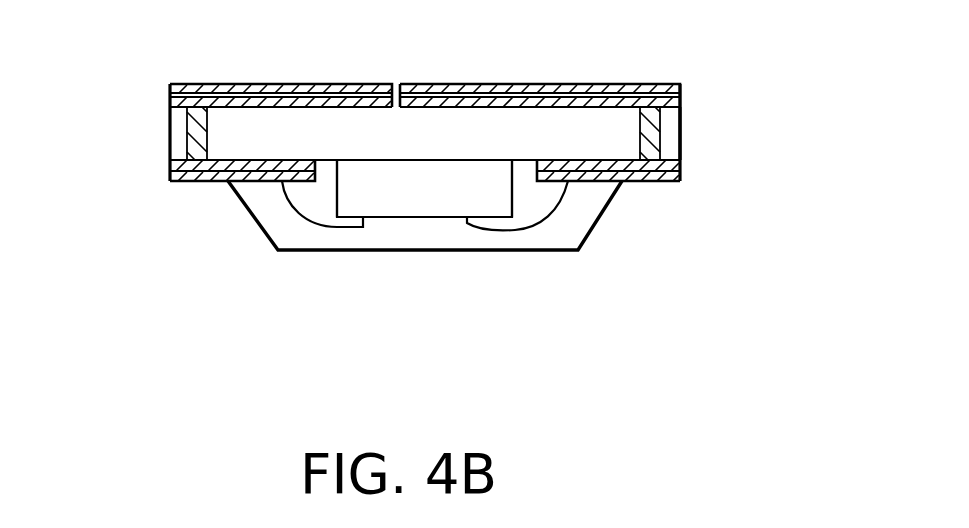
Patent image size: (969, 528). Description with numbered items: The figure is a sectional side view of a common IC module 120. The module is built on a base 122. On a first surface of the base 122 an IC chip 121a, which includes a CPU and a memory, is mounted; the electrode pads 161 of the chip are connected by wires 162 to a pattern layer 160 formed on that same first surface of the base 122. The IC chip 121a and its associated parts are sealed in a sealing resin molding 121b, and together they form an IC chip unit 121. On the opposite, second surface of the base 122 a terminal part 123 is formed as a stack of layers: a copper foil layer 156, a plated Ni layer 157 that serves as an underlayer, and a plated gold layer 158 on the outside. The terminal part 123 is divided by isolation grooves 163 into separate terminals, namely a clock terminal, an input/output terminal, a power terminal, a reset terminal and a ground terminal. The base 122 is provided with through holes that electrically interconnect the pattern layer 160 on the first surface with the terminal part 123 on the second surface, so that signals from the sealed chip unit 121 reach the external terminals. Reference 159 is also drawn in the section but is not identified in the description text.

The IC module 120 is at (743, 221).
The IC chip unit 121 is at (600, 328).
The IC chip 121a is at (428, 200).
The sealing resin molding 121b is at (544, 237).
The base 122 is at (277, 126).
The terminal part 123 is at (800, 5).
The copper foil layer 156 is at (681, 119).
The plated Ni layer 157 is at (681, 98).
The plated gold layer 158 is at (657, 86).
The sealing member 159 is at (192, 149).
The pattern layer 160 is at (681, 163).
The electrode pads 161 is at (373, 222).
The wires 162 is at (283, 228).
The isolation grooves 163 is at (393, 80).